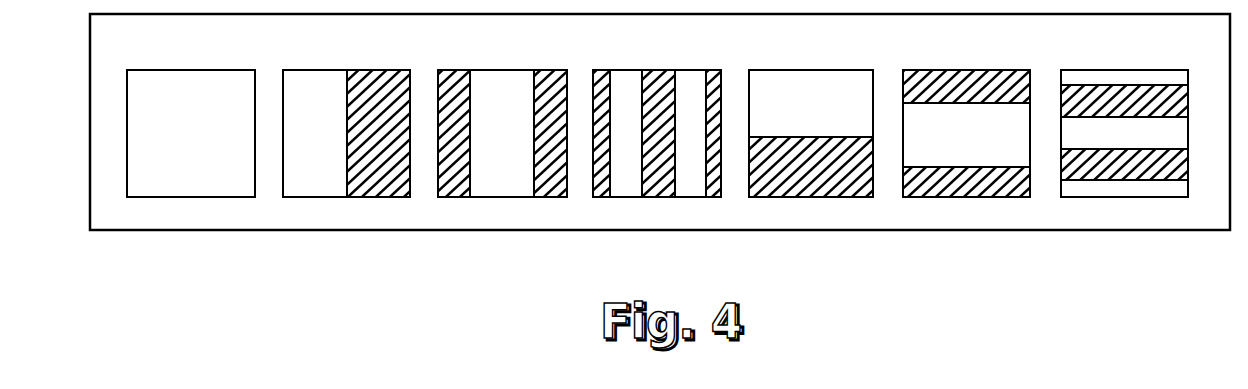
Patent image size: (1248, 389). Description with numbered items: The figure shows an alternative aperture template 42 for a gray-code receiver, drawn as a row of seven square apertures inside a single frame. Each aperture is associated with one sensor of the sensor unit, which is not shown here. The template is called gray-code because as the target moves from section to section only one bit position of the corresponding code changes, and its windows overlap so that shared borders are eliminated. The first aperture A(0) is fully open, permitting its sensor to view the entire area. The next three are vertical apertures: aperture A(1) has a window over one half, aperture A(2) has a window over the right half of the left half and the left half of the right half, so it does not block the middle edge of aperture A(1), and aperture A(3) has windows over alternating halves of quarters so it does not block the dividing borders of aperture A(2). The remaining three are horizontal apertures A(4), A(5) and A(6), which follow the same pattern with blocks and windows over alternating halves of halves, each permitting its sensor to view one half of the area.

The aperture template 42 is at (90, 145).
The aperture A 0 is at (191, 115).
The first vertical aperture A 1 is at (346, 115).
The aperture A 2 is at (502, 115).
The aperture A 3 is at (657, 115).
The first horizontal aperture A 4 is at (811, 115).
The aperture A 5 is at (966, 115).
The aperture A 6 is at (1124, 115).